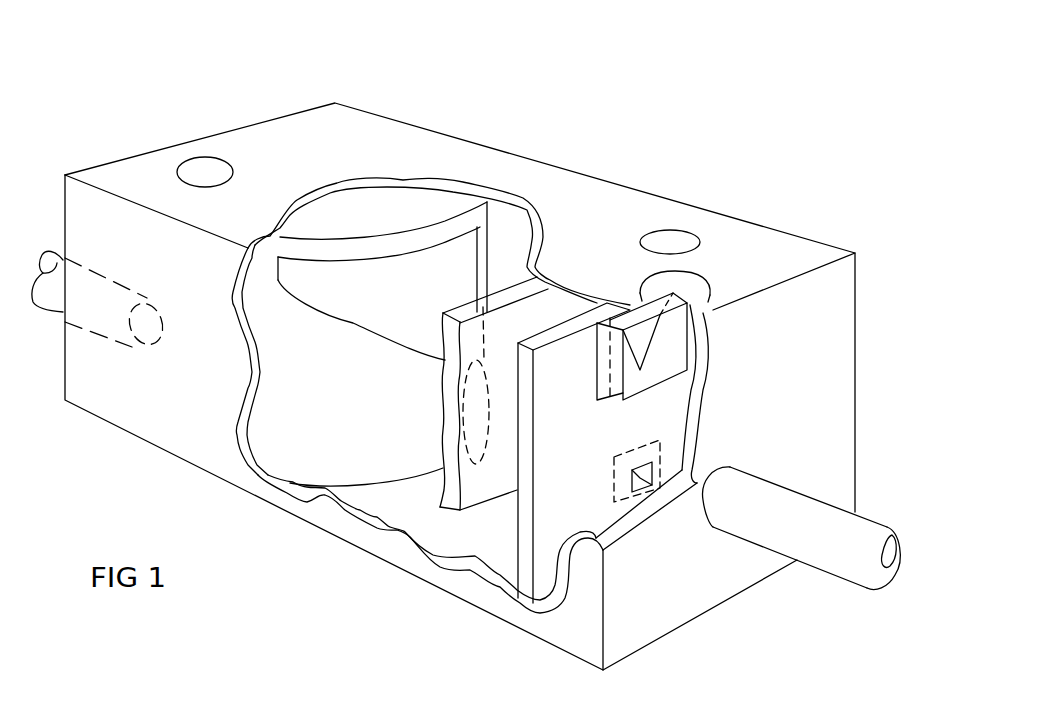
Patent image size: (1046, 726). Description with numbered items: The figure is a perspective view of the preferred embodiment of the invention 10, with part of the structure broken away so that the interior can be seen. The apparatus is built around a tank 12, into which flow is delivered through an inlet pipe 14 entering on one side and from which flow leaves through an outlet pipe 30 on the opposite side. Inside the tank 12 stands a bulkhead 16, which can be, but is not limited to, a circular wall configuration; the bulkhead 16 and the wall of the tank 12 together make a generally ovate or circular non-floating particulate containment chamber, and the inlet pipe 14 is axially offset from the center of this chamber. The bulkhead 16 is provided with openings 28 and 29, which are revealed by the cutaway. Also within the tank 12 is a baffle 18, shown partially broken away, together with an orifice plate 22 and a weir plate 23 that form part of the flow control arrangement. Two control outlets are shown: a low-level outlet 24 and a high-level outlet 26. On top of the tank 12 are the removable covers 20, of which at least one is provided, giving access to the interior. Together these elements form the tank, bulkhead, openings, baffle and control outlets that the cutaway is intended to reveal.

The invention 10 is at (645, 62).
The tank 12 is at (367, 113).
The inlet pipe 14 is at (52, 307).
The bulkhead 16 is at (320, 425).
The baffle 18 is at (447, 508).
The removable cover 20 is at (205, 167).
The orifice plate 22 is at (610, 485).
The weir plate 23 is at (598, 366).
The low-level outlet 24 is at (668, 490).
The high-level outlet 26 is at (642, 368).
The opening 28 is at (442, 252).
The opening 29 is at (487, 386).
The outlet pipe 30 is at (836, 574).